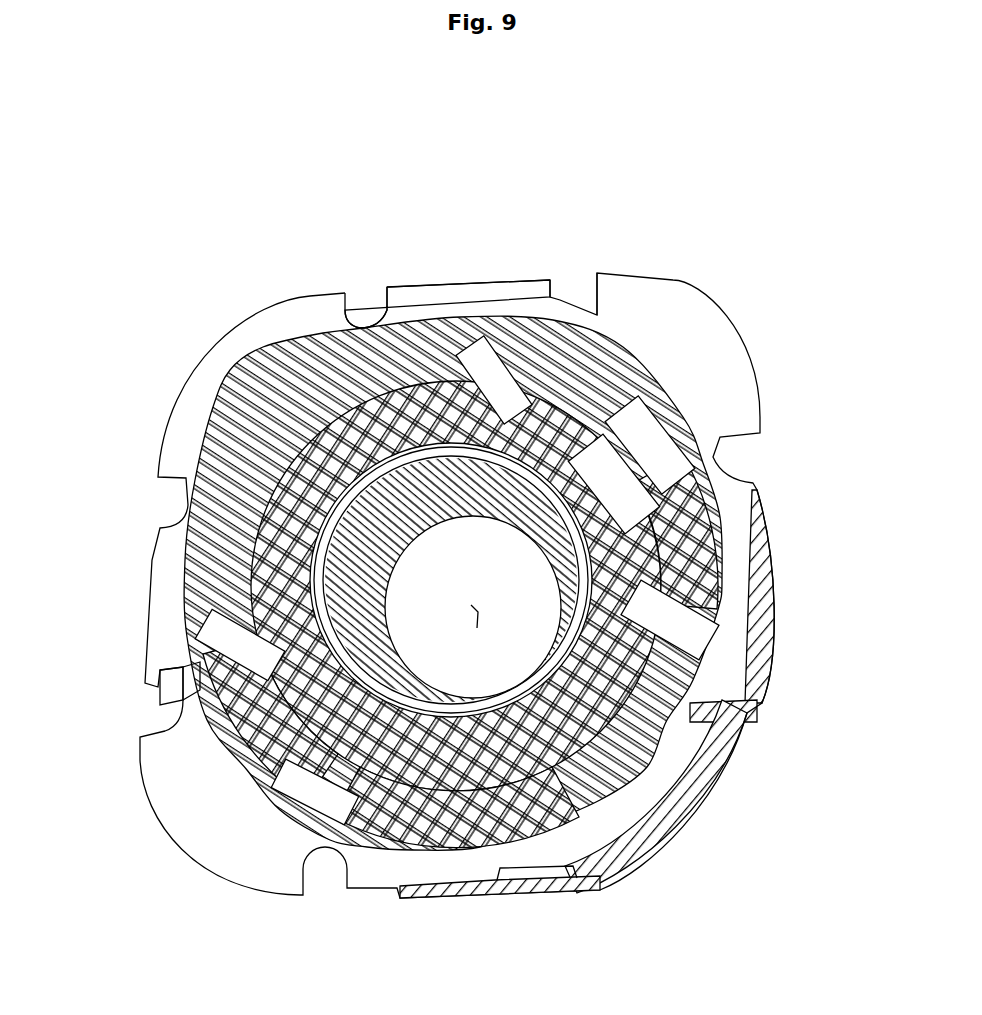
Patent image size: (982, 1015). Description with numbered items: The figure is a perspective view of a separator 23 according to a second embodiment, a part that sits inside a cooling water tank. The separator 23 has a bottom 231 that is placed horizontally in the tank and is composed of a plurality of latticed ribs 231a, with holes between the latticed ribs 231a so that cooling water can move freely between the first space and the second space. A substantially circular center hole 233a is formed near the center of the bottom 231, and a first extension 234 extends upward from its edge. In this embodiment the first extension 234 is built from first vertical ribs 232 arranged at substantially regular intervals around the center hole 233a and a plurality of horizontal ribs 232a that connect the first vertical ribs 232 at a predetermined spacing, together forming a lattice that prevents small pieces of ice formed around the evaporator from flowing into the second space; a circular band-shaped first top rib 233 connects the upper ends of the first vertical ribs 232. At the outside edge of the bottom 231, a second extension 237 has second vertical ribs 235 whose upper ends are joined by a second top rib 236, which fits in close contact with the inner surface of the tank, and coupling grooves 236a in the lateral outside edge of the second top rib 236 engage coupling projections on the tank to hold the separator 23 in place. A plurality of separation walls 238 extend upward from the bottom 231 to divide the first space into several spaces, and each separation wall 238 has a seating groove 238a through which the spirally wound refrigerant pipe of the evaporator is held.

The separator 23 is at (486, 513).
The bottom 231 is at (700, 808).
The latticed ribs 231a is at (397, 848).
The first vertical ribs 232 is at (695, 622).
The horizontal ribs 232a is at (697, 667).
The first top rib 233 is at (707, 557).
The center hole 233a is at (223, 613).
The first extension 234 is at (739, 674).
The second vertical ribs 235 is at (508, 300).
The second top rib 236 is at (469, 288).
The coupling grooves 236a is at (368, 300).
The second extension 237 is at (492, 235).
The separation walls 238 is at (685, 432).
The seating groove 238a is at (705, 490).